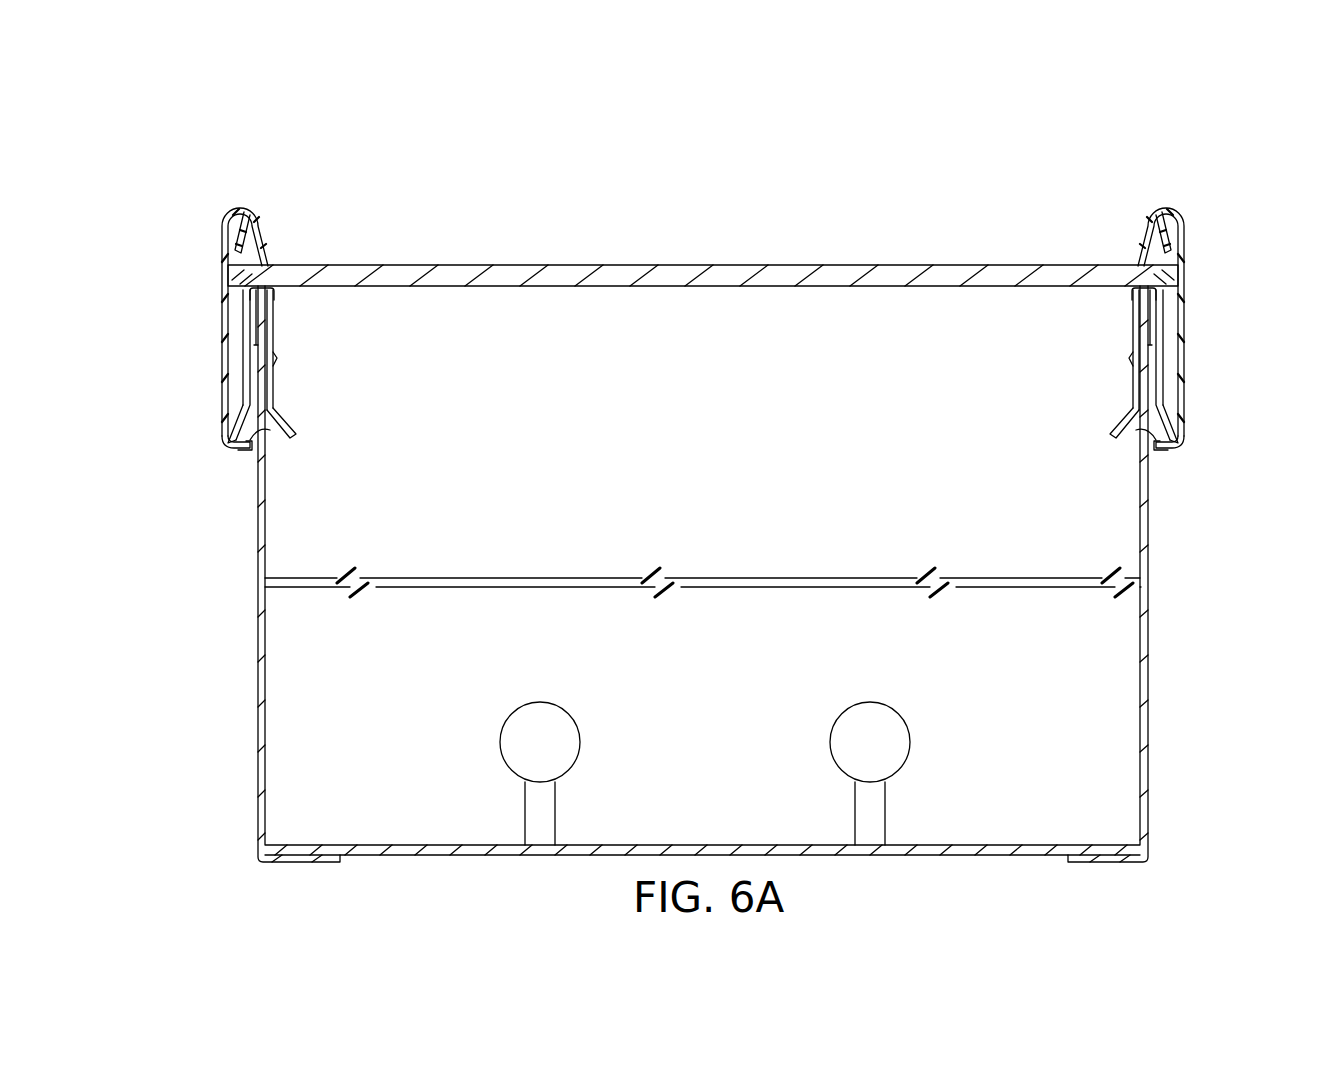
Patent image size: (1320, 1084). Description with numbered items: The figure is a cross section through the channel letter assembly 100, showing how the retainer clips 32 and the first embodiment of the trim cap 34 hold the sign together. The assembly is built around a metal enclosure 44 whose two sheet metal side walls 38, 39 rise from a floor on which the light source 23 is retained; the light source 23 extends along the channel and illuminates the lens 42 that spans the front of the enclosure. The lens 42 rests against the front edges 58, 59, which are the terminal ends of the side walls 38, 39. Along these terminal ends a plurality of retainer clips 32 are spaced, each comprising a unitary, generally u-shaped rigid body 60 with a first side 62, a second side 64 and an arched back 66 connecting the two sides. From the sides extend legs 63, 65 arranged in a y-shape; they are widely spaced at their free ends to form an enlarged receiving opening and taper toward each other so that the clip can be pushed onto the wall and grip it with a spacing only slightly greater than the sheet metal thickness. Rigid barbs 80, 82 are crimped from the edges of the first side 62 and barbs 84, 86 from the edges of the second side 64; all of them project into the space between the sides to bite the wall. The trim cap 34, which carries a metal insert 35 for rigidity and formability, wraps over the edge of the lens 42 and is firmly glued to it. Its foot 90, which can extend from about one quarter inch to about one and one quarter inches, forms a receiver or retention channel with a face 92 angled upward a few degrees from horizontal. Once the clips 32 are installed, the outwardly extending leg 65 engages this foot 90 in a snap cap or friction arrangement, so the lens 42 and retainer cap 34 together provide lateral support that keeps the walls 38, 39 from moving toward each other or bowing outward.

The channel letter assembly 100 is at (1176, 132).
The lens 42 is at (672, 268).
The enclosure 44 is at (1160, 531).
The side wall 38 is at (257, 630).
The side wall 39 is at (1148, 648).
The light source 23 is at (566, 712).
The trim cap 34 is at (221, 212).
The metal insert 35 is at (254, 228).
The retainer clip 32 is at (298, 358).
The front edge 58 is at (268, 292).
The front edge 59 is at (1150, 332).
The arched back 66 is at (250, 276).
The u-shaped rigid body 60 is at (242, 301).
The second side 64 is at (250, 374).
The leg 65 is at (246, 422).
The barb 86 is at (257, 336).
The barb 84 is at (1152, 332).
The first side 62 is at (278, 338).
The barb 82 is at (286, 366).
The barb 80 is at (1138, 374).
The leg 63 is at (294, 430).
The foot 90 is at (250, 448).
The face 92 is at (262, 430).